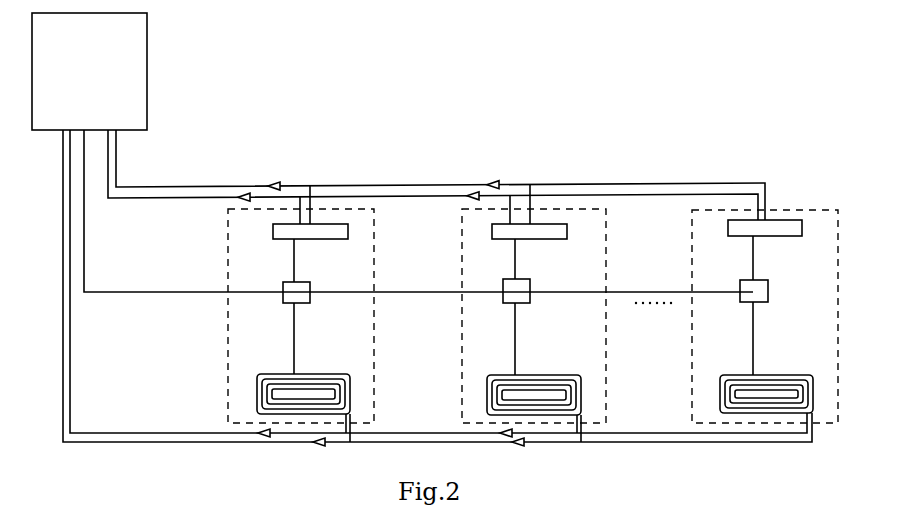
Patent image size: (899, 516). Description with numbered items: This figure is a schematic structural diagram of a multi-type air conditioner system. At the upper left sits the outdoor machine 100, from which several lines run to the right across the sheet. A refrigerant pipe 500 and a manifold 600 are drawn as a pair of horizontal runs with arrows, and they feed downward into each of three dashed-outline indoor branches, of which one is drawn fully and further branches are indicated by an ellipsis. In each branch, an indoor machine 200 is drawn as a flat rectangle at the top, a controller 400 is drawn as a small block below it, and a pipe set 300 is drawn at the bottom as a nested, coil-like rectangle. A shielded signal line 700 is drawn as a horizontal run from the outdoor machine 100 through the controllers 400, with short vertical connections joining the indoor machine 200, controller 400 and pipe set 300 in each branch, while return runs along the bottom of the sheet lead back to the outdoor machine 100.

The outdoor machine 100 is at (126, 71).
The indoor machine 200 is at (477, 216).
The pipe set 300 is at (484, 372).
The controller 400 is at (461, 299).
The refrigerant pipe 500 is at (440, 166).
The manifold 600 is at (433, 167).
The shielded signal line 700 is at (418, 243).